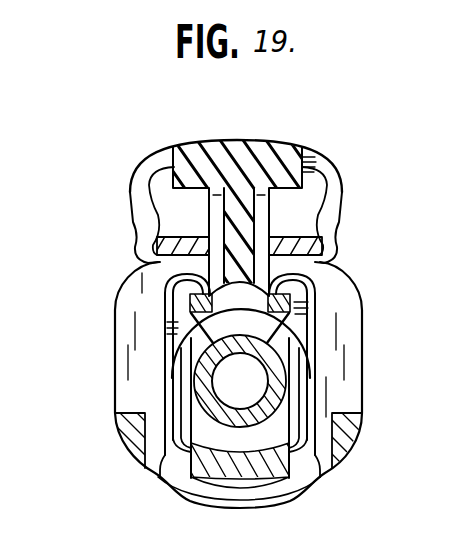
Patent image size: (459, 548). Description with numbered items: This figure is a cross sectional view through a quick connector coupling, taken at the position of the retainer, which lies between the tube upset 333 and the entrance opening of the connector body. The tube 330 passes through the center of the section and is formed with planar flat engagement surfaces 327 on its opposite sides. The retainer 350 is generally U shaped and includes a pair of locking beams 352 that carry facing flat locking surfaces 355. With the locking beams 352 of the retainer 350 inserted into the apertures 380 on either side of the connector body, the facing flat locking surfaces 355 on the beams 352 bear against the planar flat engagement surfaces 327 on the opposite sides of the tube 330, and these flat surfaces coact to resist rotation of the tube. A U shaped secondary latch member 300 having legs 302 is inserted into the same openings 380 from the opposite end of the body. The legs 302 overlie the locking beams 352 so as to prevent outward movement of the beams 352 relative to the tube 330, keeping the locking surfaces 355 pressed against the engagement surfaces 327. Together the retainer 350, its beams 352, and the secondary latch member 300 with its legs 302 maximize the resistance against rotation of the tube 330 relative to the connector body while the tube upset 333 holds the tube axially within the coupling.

The secondary latch member 300 is at (215, 137).
The legs 302 is at (142, 186).
The planar flat engagement surfaces 327 is at (318, 348).
The tube 330 is at (185, 360).
The tube upset 333 is at (268, 383).
The retainer 350 is at (168, 485).
The locking beams 352 is at (180, 406).
The facing flat locking surfaces 355 is at (200, 370).
The apertures 380 is at (140, 433).